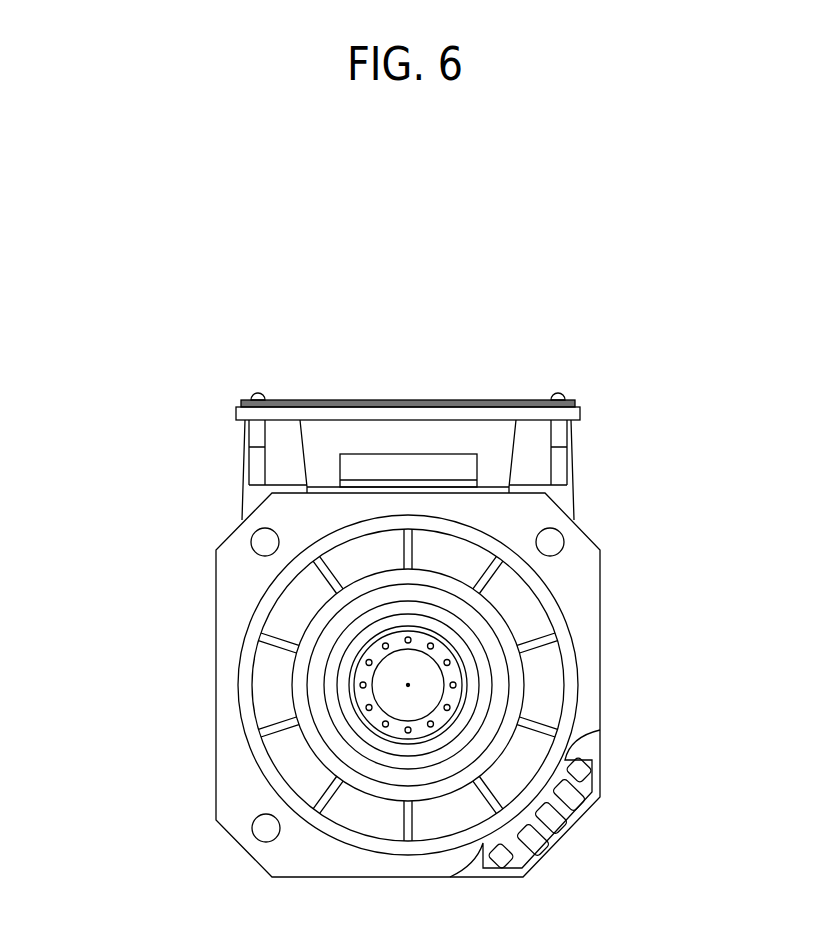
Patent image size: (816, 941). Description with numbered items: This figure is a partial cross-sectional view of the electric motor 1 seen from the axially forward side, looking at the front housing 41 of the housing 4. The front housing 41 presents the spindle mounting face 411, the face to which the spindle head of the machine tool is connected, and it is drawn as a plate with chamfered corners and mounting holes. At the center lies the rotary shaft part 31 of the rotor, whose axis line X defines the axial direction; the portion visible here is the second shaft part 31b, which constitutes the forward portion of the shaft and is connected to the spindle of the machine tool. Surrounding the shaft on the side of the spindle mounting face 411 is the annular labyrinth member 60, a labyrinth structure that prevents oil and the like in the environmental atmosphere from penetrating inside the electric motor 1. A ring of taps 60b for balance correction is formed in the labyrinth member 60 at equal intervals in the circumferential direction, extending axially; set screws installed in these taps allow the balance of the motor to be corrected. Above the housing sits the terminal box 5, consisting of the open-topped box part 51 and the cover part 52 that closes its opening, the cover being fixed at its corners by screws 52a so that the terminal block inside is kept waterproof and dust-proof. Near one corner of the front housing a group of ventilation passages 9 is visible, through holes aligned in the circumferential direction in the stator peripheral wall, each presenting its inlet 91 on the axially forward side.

The electric motor 1 is at (608, 228).
The housing 4 is at (331, 676).
The front housing 41 is at (218, 543).
The spindle mounting face 411 is at (243, 586).
The terminal box 5 is at (482, 399).
The box part 51 is at (358, 437).
The cover part 52 is at (418, 400).
The screws 52a is at (258, 395).
The labyrinth member 60 is at (360, 703).
The taps 60b is at (378, 727).
The rotary shaft part 31 is at (563, 685).
The second shaft part 31b is at (428, 700).
The axis line X is at (408, 685).
The ventilation passage 9 is at (557, 813).
The inlet 91 is at (563, 832).